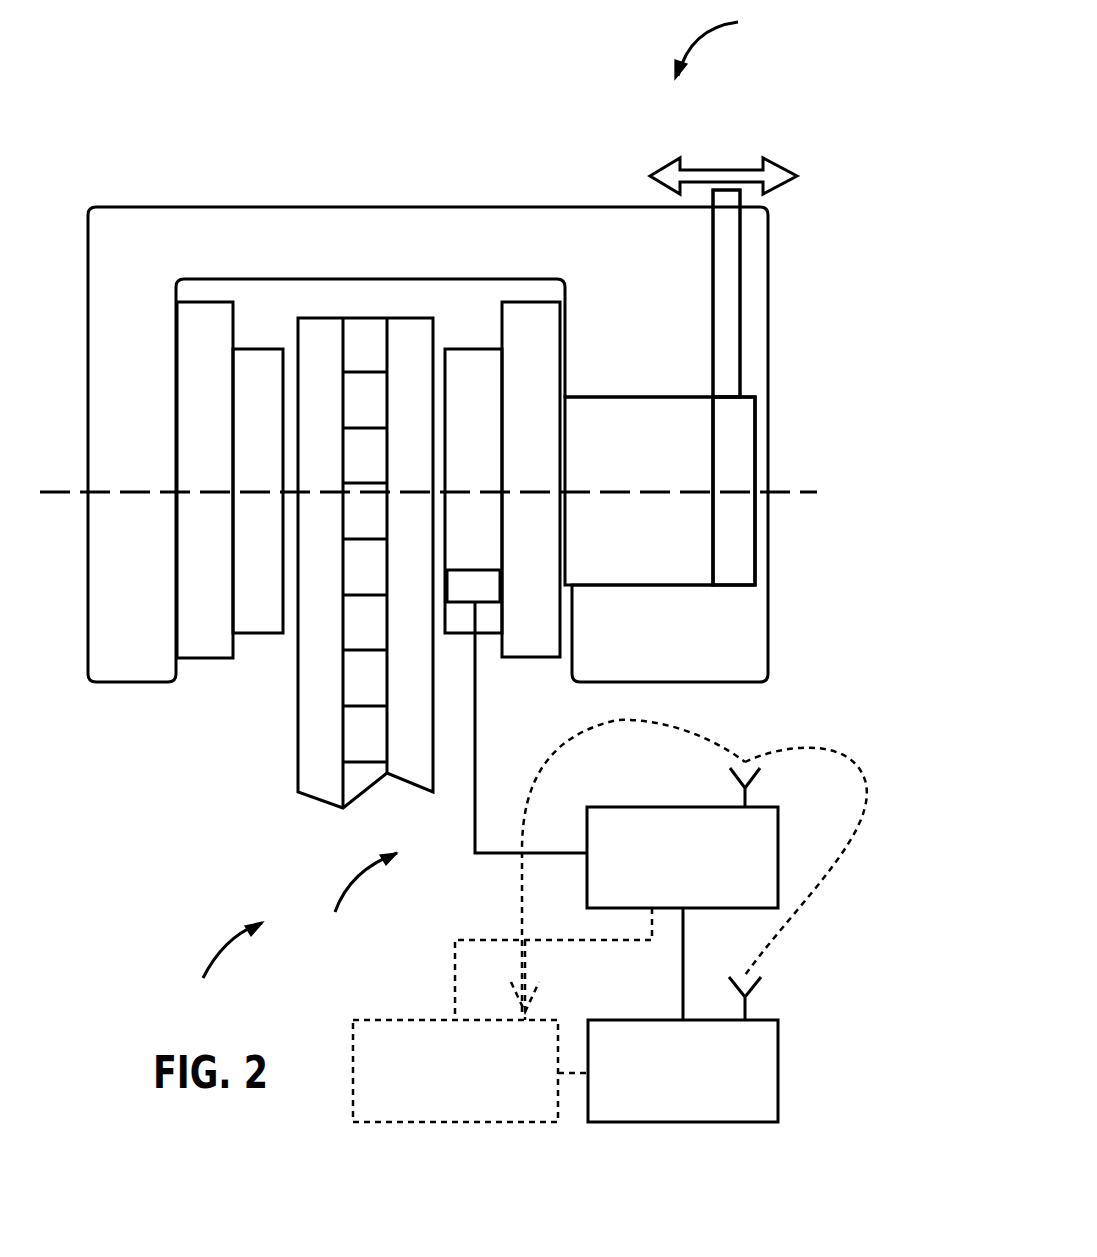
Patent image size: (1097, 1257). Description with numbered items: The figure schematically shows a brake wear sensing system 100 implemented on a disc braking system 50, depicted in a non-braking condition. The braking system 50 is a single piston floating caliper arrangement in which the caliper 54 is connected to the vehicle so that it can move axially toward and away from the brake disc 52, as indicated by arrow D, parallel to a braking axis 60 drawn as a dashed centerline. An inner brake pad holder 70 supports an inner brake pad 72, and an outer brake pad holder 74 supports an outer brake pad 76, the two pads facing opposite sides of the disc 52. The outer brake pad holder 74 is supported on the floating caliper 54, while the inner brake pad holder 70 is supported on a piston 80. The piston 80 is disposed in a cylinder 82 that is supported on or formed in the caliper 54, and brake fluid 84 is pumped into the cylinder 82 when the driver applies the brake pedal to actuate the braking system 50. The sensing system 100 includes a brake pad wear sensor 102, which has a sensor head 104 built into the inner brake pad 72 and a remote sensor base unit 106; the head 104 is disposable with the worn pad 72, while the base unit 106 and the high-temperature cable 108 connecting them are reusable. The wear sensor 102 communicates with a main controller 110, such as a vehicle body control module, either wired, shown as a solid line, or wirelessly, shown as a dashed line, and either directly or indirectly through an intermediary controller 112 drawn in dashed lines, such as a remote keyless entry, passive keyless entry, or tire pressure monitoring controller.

The disc braking system 50 is at (723, 43).
The arrow indicating axial movement D is at (724, 172).
The caliper 54 is at (678, 283).
The braking axis 60 is at (798, 487).
The outer brake pad holder 74 is at (207, 313).
The outer brake pad 76 is at (263, 364).
The brake disc 52 is at (298, 707).
The inner brake pad 72 is at (482, 377).
The inner brake pad holder 70 is at (534, 350).
The piston 80 is at (603, 440).
The cylinder 82 is at (642, 398).
The brake fluid 84 is at (730, 505).
The sensor head 104 is at (481, 604).
The cable 108 is at (502, 853).
The sensor base unit 106 is at (608, 807).
The main controller 110 is at (778, 1038).
The intermediary controller 112 is at (392, 1017).
The brake pad wear sensor 102 is at (352, 896).
The sensing system 100 is at (218, 965).